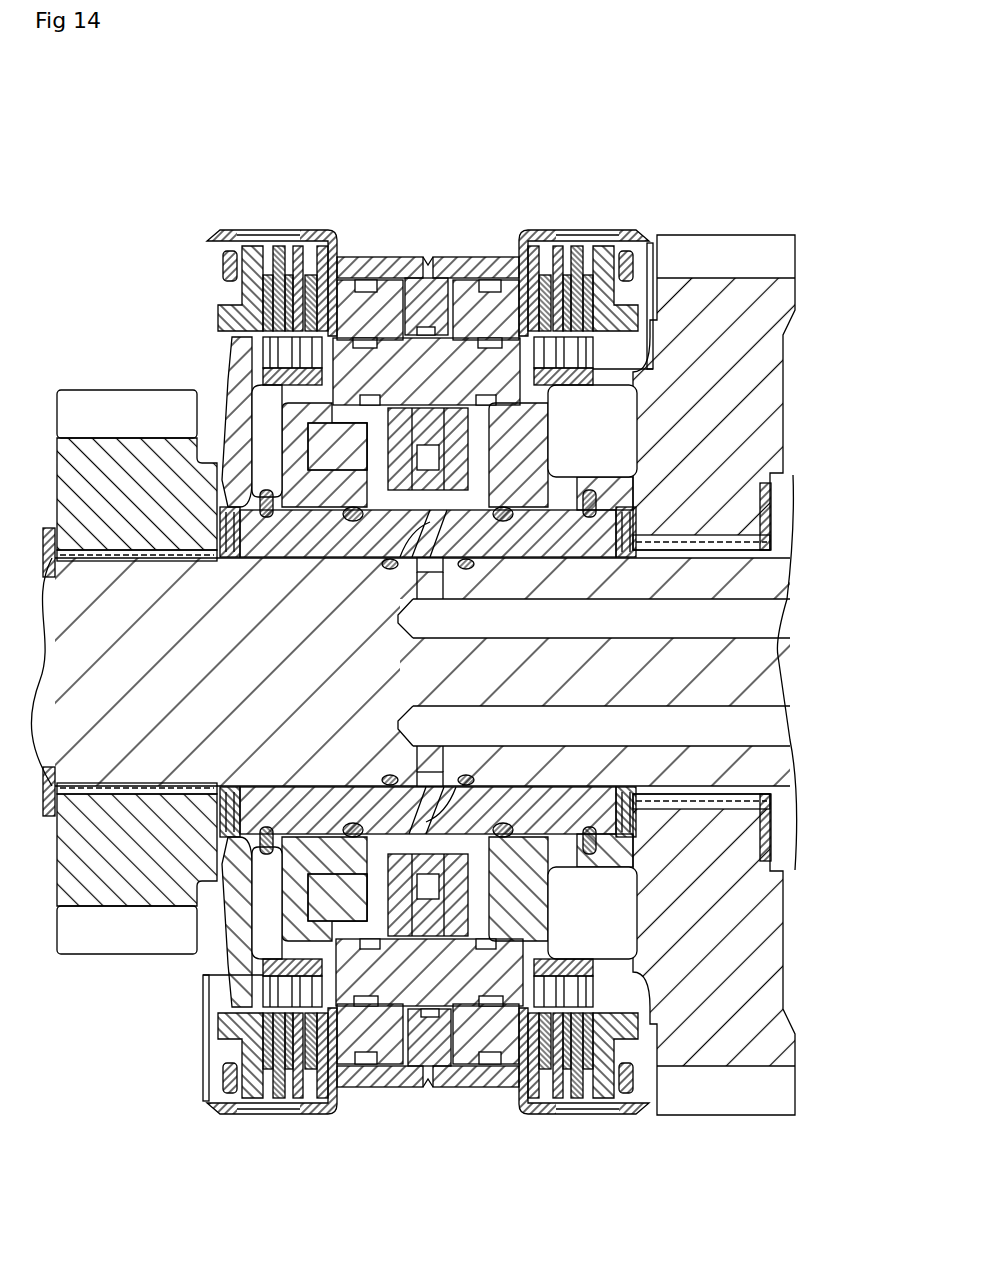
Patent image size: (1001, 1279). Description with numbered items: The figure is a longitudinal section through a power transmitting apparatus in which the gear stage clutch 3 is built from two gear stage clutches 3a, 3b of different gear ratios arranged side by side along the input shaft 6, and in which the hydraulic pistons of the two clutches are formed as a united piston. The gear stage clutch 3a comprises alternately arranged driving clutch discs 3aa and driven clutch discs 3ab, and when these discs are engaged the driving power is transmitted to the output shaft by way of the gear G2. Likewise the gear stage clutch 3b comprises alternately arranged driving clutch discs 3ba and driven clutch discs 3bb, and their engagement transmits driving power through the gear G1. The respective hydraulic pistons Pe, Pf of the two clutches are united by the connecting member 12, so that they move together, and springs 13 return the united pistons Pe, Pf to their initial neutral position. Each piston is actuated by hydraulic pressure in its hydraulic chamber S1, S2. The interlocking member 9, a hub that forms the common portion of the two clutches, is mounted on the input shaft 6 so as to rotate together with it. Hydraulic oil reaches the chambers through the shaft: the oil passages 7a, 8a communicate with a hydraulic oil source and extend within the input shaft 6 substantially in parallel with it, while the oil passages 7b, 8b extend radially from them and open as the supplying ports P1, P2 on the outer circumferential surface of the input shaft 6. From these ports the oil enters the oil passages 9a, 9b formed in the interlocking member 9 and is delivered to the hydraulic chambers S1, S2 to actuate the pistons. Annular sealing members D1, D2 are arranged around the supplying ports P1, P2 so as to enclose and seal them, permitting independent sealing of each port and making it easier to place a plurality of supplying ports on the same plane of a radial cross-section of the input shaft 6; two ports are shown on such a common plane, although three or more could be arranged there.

The gear stage clutch 3 is at (577, 183).
The gear stage clutch 3a is at (270, 692).
The gear stage clutch 3b is at (584, 692).
The driving clutch discs 3aa is at (315, 1103).
The driven clutch discs 3ab is at (280, 1102).
The driving clutch discs 3ba is at (530, 1103).
The driven clutch discs 3bb is at (570, 1103).
The hydraulic piston Pe is at (367, 297).
The hydraulic piston Pf is at (482, 298).
The connecting member 12 is at (434, 346).
The springs 13 is at (398, 423).
The gear G1 is at (783, 310).
The gear G2 is at (68, 462).
The hydraulic chamber S1 is at (317, 433).
The hydraulic chamber S2 is at (553, 483).
The input shaft 6 is at (55, 603).
The oil passage 7a is at (748, 624).
The oil passage 7b is at (400, 608).
The oil passage 8a is at (758, 733).
The oil passage 8b is at (398, 727).
The interlocking member 9 is at (588, 815).
The oil passage 9a is at (393, 568).
The oil passage 9b is at (387, 789).
The supplying port P1 is at (443, 566).
The supplying port P2 is at (445, 779).
The sealing member D1 is at (465, 568).
The sealing member D2 is at (462, 776).